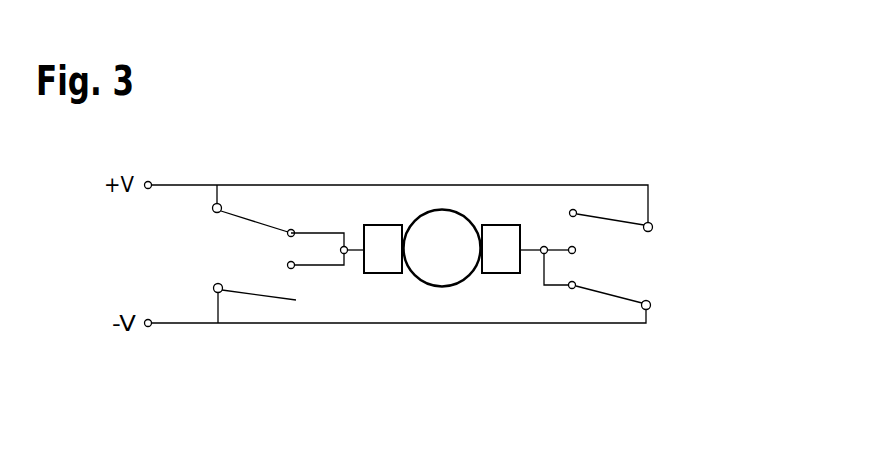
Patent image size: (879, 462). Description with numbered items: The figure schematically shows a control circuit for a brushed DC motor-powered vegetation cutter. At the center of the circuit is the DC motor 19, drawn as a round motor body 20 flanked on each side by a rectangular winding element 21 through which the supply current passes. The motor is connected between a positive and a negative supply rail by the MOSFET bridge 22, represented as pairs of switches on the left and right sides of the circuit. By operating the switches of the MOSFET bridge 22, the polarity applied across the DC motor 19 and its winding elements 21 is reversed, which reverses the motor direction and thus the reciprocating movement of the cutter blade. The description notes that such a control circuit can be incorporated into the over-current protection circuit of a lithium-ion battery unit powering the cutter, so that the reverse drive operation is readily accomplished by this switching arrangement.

The DC motor 19 is at (473, 293).
The electric motor 20 is at (443, 277).
The coil / winding element 21 is at (376, 272).
The MOSFET bridge 22 is at (241, 251).